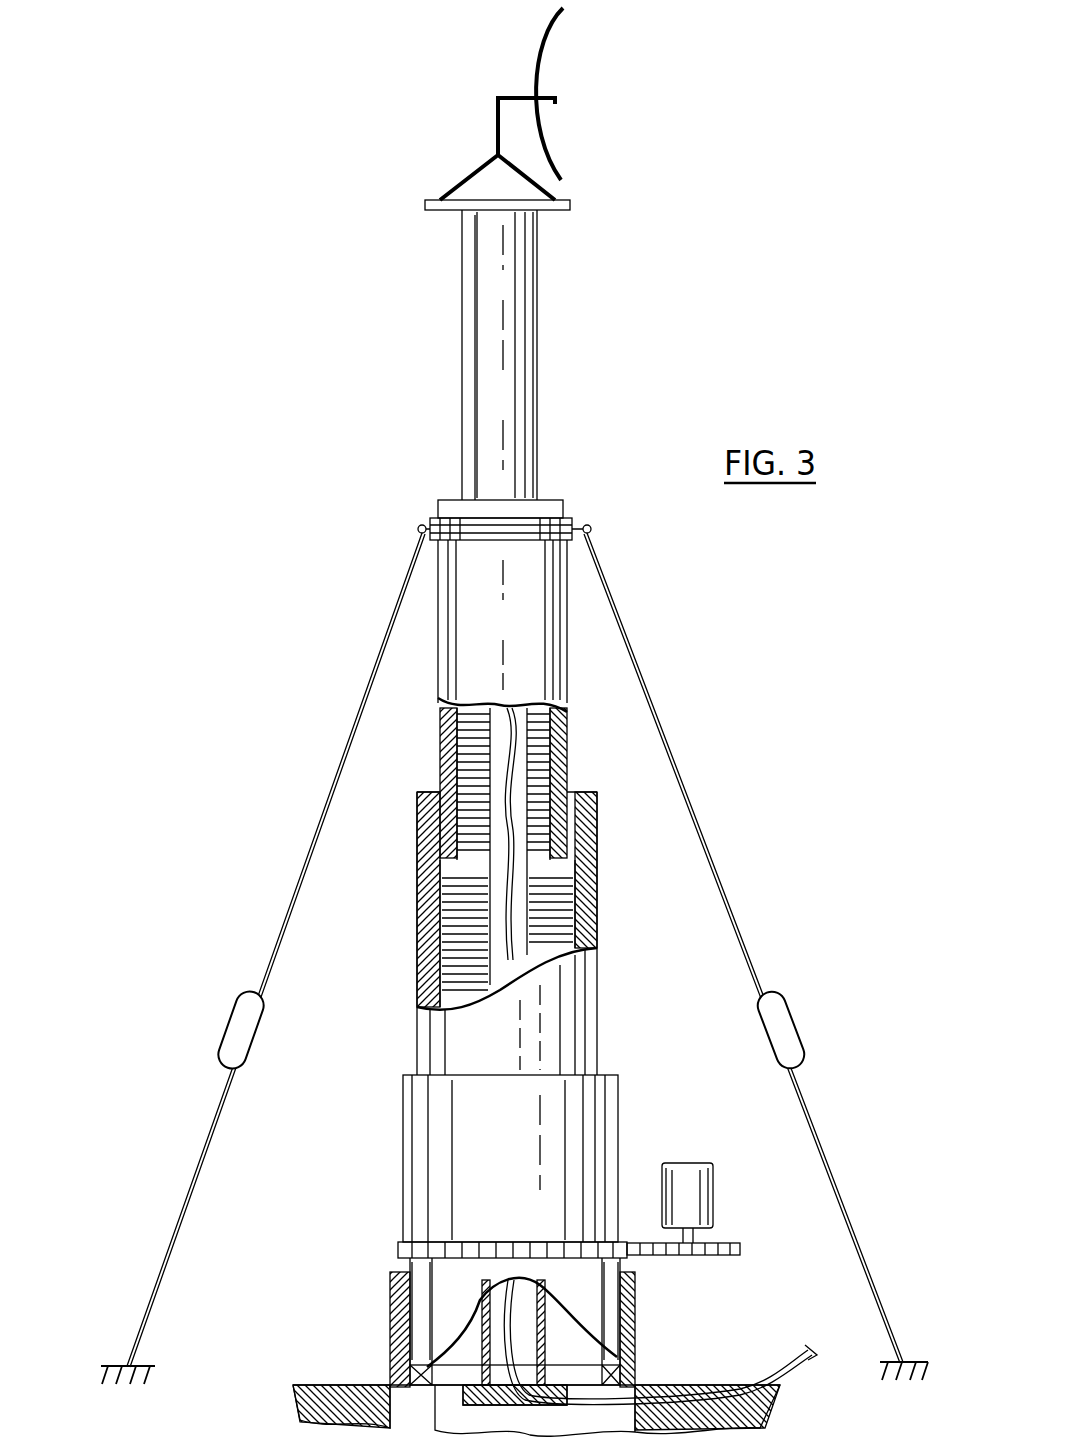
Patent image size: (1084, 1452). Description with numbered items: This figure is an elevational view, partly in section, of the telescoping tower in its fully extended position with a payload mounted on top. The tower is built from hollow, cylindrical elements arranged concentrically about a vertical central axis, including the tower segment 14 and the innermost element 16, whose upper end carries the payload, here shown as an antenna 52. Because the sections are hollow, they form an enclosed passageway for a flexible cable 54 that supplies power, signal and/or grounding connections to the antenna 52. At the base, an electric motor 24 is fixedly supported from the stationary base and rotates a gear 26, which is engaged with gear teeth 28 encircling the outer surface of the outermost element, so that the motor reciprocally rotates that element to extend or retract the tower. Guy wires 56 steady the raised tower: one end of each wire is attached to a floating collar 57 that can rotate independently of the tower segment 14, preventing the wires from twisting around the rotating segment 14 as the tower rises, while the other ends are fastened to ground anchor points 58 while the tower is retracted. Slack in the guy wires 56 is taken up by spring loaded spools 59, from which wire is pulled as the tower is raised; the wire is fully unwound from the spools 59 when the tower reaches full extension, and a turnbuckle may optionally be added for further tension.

The tower segment 14 is at (453, 670).
The hollow cylindrical element 16 is at (472, 290).
The electric motor 24 is at (695, 1163).
The gear 26 is at (740, 1245).
The gear teeth 28 is at (400, 1248).
The antenna 52 is at (545, 136).
The flexible cable 54 is at (505, 940).
The guy wires 56 is at (358, 704).
The floating collar 57 is at (432, 516).
The ground anchor points 58 is at (112, 1358).
The spring loaded spools 59 is at (228, 1005).